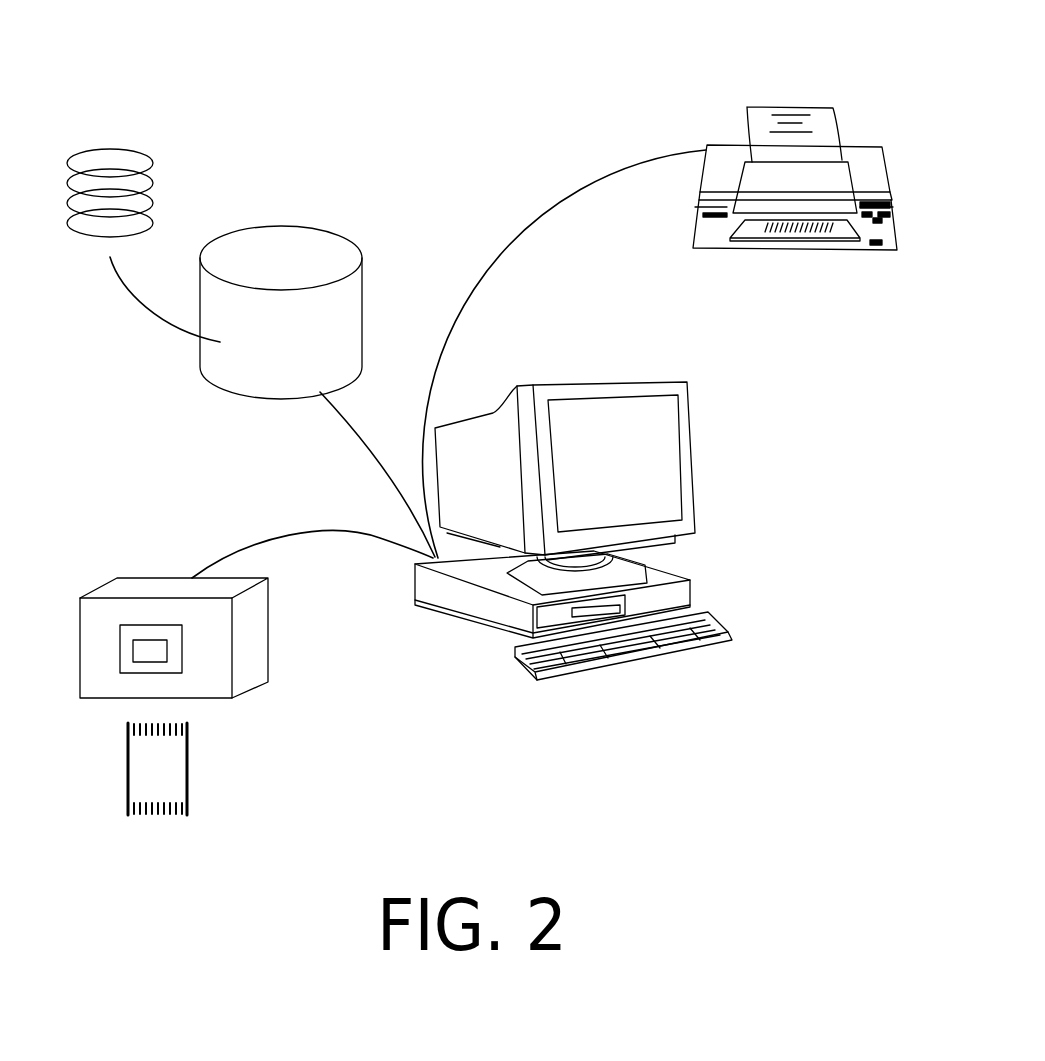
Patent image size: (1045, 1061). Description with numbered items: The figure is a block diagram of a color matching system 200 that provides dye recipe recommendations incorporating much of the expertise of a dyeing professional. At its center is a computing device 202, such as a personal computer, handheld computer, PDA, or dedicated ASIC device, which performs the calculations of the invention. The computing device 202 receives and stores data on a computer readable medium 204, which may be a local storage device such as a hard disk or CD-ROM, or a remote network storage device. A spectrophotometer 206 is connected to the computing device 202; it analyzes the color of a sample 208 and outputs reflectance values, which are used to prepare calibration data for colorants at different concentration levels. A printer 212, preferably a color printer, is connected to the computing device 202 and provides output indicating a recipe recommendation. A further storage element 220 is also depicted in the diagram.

The color matching system 200 is at (455, 192).
The computing device 202 is at (600, 365).
The computer readable medium 204 is at (280, 226).
The spectrophotometer 206 is at (170, 578).
The sample 208 is at (193, 768).
The printer 212 is at (732, 153).
The data storage 220 is at (110, 160).